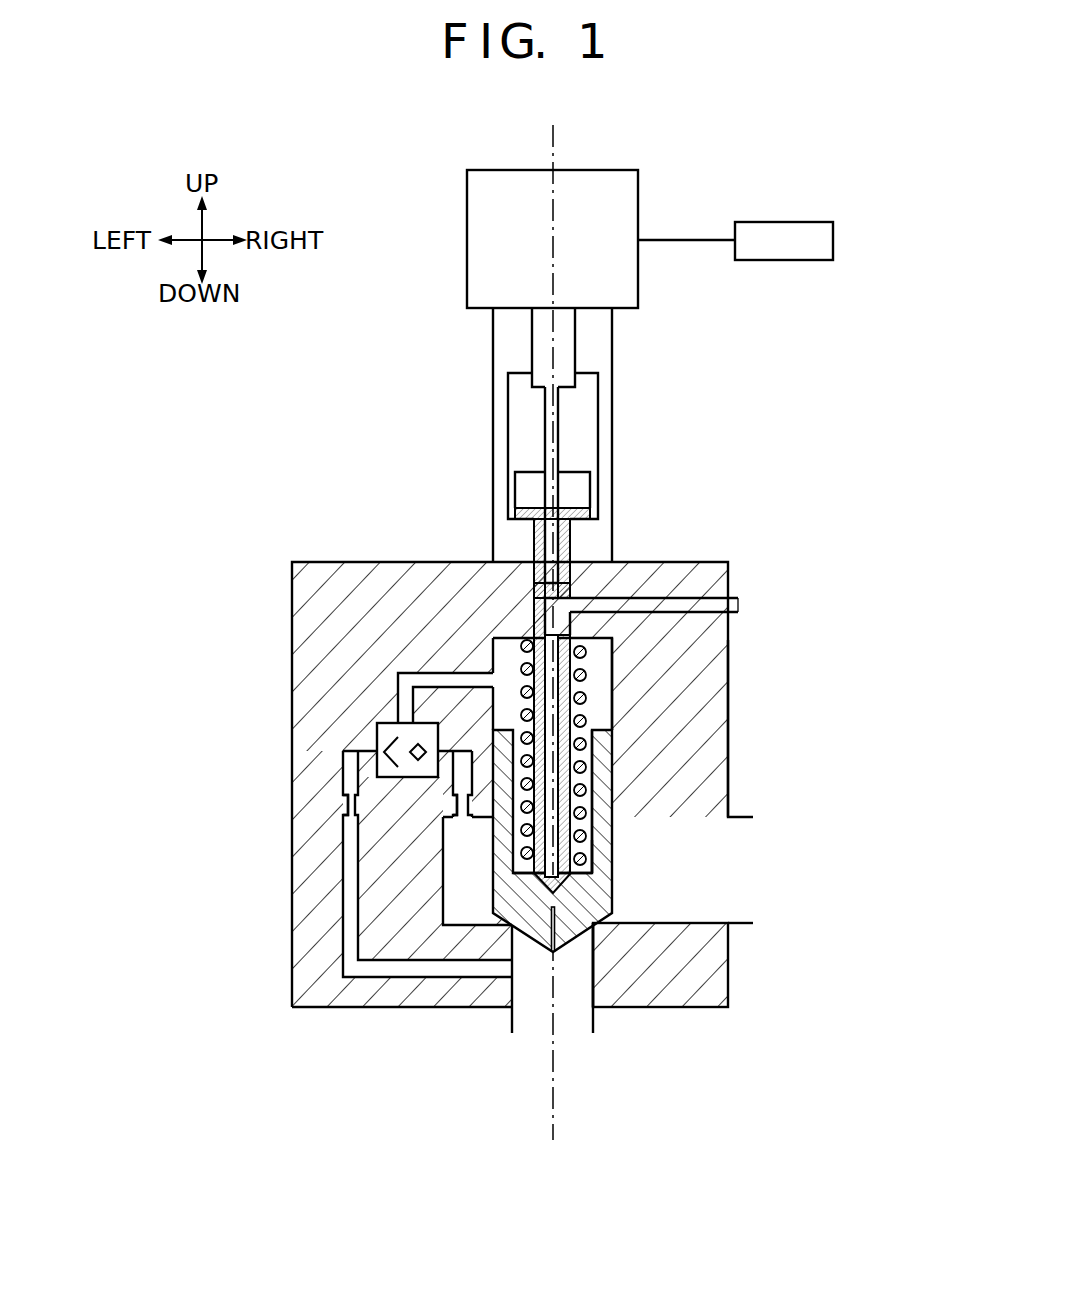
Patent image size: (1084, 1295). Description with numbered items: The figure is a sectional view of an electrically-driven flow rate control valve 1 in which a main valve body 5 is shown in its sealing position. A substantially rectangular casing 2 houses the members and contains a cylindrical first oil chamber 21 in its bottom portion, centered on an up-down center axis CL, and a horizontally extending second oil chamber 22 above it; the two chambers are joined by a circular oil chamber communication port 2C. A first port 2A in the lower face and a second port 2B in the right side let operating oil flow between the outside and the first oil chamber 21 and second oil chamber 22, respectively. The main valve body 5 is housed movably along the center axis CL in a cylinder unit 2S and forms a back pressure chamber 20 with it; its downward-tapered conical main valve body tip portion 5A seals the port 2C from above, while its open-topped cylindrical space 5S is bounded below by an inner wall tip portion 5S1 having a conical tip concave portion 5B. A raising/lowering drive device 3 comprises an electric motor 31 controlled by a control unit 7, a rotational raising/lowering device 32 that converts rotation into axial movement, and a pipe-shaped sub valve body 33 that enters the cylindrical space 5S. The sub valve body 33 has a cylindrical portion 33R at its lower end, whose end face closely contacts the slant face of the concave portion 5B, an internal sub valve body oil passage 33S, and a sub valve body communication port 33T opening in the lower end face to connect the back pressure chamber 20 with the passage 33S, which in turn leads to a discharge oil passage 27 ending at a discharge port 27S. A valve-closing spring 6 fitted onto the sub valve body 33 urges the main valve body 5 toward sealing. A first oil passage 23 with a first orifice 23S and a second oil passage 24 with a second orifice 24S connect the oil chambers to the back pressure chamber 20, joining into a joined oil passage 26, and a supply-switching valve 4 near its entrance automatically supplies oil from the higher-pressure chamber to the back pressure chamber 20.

The flow rate control valve 1 is at (829, 389).
The casing 2 is at (682, 562).
The first port 2A is at (603, 1033).
The second port 2B is at (757, 813).
The oil chamber communication port 2C is at (596, 926).
The cylinder unit 2S is at (612, 683).
The raising/lowering drive device 3 is at (352, 375).
The electric motor 31 is at (467, 297).
The rotational raising/lowering device 32 is at (513, 490).
The sub valve body 33 is at (509, 765).
The sub valve body oil passage 33S is at (533, 658).
The sub valve body communication port 33T is at (568, 886).
The cylindrical portion 33R is at (527, 871).
The supply-switching valve 4 is at (362, 721).
The main valve body 5 is at (586, 897).
The main valve body tip portion 5A is at (574, 931).
The tip concave portion 5B is at (540, 881).
The cylindrical space 5S is at (596, 793).
The inner wall tip portion 5S1 is at (589, 860).
The valve-closing spring 6 is at (587, 718).
The control unit 7 is at (803, 222).
The back pressure chamber 20 is at (603, 664).
The first oil chamber 21 is at (537, 1008).
The second oil chamber 22 is at (703, 898).
The first oil passage 23 is at (343, 938).
The first orifice 23S is at (343, 808).
The second oil passage 24 is at (447, 806).
The second orifice 24S is at (453, 793).
The joined oil passage 26 is at (427, 673).
The discharge oil passage 27 is at (688, 597).
The discharge port 27S is at (741, 606).
The center axis CL is at (562, 1140).